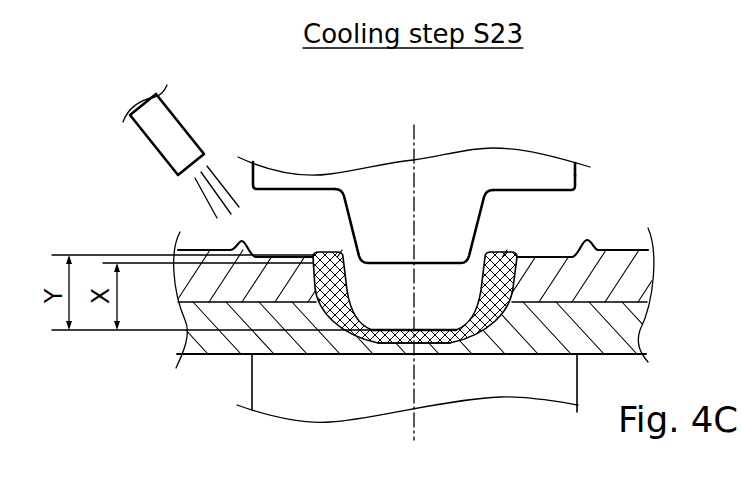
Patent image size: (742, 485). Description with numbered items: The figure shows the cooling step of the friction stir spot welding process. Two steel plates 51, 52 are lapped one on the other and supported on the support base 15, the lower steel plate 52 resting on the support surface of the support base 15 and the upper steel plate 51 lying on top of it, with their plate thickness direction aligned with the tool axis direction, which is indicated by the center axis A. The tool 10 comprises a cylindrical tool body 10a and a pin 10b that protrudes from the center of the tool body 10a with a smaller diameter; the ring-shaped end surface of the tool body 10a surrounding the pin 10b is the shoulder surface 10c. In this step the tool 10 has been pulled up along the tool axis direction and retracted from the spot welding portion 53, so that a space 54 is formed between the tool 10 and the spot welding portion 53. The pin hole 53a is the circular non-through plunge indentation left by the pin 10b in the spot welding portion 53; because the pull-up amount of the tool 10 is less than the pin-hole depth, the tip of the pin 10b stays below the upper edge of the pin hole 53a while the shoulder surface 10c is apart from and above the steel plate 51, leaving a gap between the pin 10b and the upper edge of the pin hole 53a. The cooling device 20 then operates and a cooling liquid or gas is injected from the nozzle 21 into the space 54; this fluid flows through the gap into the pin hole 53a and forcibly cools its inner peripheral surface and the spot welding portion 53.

The tool 10 is at (468, 178).
The tool body 10a is at (543, 180).
The pin 10b is at (465, 210).
The shoulder surface 10c is at (553, 192).
The support base 15 is at (263, 382).
The cooling device 20 is at (162, 149).
The nozzle 21 is at (175, 123).
The steel plate 51 is at (644, 272).
The steel plate 52 is at (632, 328).
The spot welding portion 53 is at (415, 361).
The pin hole 53a is at (455, 322).
The space 54 is at (304, 233).
The center axis A is at (413, 421).